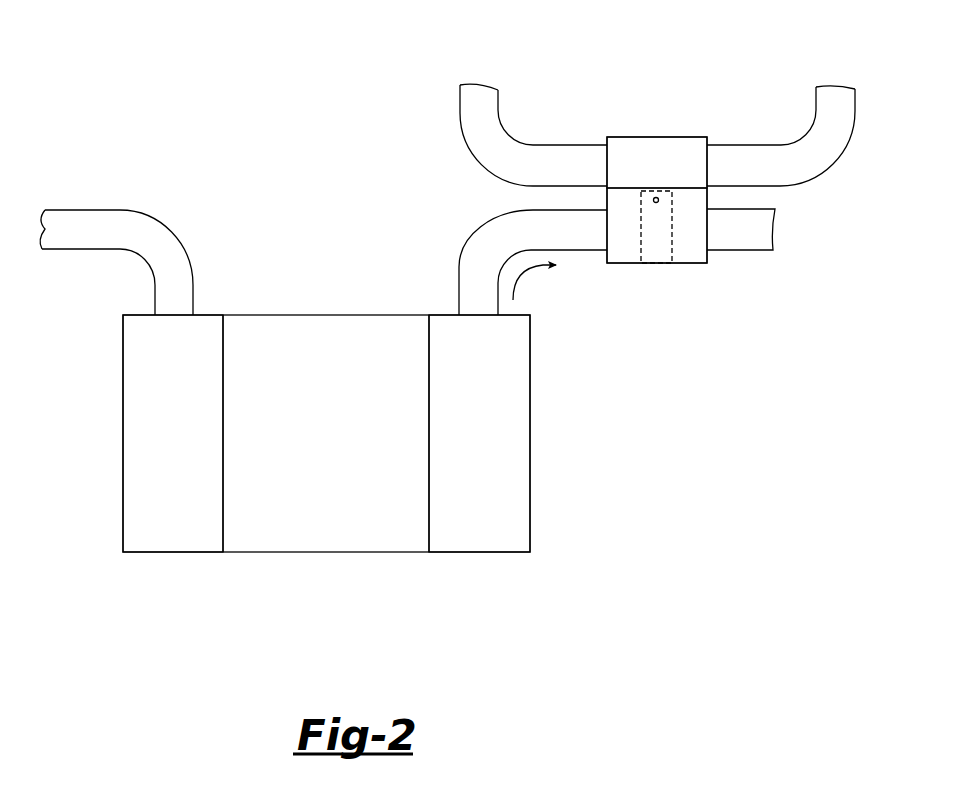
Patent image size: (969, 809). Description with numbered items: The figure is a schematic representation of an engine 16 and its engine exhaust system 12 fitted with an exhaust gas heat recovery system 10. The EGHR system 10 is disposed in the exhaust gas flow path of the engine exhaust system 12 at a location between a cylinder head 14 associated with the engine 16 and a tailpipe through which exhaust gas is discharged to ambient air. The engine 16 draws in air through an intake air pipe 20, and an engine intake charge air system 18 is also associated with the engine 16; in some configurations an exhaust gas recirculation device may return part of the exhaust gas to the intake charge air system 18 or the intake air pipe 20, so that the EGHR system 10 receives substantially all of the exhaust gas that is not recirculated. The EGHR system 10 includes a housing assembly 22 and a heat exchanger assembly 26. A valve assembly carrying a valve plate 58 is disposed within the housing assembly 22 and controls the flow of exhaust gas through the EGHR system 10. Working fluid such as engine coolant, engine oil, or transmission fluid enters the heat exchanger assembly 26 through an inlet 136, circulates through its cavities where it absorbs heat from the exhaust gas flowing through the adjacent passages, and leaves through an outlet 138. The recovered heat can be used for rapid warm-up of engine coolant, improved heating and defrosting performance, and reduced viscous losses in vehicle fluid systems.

The exhaust gas heat recovery system 10 is at (620, 93).
The engine exhaust system 12 is at (477, 266).
The cylinder head 14 is at (483, 552).
The engine 16 is at (302, 320).
The engine intake charge air system 18 is at (170, 552).
The intake air pipe 20 is at (88, 213).
The housing assembly 22 is at (682, 270).
The heat exchanger assembly 26 is at (682, 134).
The valve plate 58 is at (660, 252).
The inlet 136 is at (466, 110).
The outlet 138 is at (820, 103).